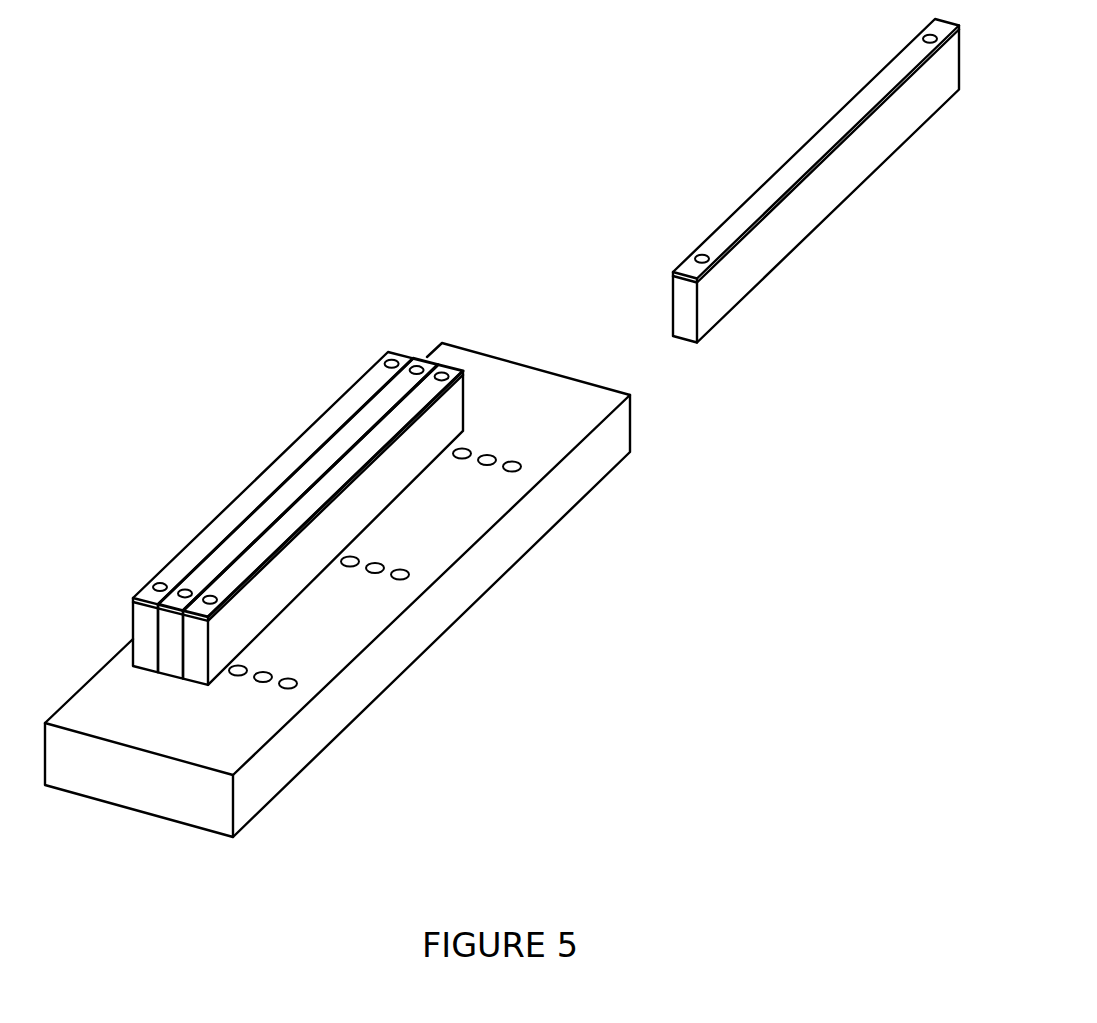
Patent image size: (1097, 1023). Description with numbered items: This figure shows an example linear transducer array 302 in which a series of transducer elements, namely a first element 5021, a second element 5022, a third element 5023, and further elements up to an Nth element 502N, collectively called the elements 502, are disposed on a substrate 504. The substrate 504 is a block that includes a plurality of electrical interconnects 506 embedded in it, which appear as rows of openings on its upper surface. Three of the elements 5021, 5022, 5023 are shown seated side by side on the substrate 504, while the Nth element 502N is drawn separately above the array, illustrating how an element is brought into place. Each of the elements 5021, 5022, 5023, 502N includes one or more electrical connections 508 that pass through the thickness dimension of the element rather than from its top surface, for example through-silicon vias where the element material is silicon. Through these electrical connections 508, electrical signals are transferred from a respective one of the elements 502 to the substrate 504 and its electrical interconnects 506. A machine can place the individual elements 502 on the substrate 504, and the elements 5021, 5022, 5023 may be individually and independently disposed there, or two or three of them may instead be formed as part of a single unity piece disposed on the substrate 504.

The transducer array 302 is at (345, 537).
The elements 502 is at (298, 461).
The first element 5021 is at (405, 353).
The second element 5022 is at (426, 358).
The third element 5023 is at (323, 461).
The Nth element 502N is at (816, 181).
The substrate 504 is at (560, 523).
The electrical interconnects 506 is at (517, 442).
The electrical connections 508 is at (817, 150).